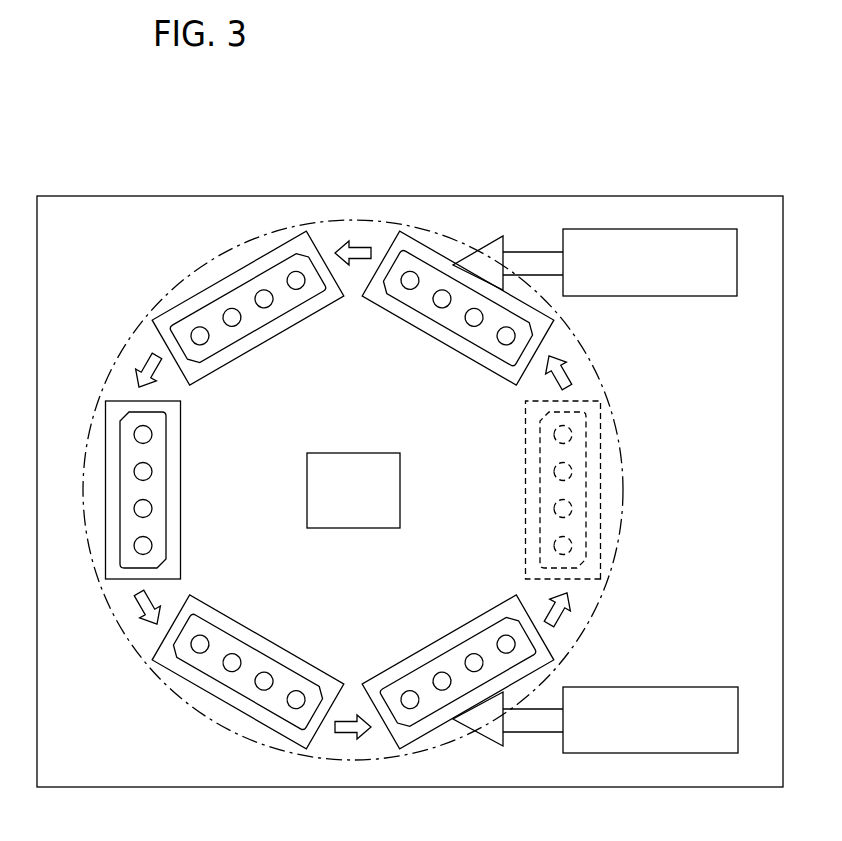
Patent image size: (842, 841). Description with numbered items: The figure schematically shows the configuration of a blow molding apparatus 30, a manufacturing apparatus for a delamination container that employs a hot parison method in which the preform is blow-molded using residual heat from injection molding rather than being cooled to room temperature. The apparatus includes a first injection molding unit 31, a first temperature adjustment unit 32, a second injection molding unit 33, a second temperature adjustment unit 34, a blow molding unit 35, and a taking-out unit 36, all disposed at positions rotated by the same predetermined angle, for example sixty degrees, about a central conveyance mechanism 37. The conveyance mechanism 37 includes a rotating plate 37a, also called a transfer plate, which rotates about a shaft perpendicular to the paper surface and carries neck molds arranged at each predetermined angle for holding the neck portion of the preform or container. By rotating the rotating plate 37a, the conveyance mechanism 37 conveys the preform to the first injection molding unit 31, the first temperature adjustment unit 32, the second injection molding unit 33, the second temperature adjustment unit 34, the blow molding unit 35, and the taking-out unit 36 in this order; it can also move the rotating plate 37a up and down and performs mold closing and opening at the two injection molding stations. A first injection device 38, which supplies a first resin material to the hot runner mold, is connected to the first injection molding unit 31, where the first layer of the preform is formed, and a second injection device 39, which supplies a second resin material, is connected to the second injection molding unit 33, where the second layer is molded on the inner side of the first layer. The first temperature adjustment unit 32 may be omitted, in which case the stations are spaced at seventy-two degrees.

The blow molding apparatus 30 is at (657, 196).
The first injection molding unit 31 is at (427, 640).
The first temperature adjustment unit 32 is at (526, 487).
The second injection molding unit 33 is at (432, 340).
The second temperature adjustment unit 34 is at (277, 340).
The blow molding unit 35 is at (183, 487).
The taking-out unit 36 is at (277, 640).
The conveyance mechanism 37 is at (350, 528).
The rotating plate 37a is at (623, 513).
The first injection device 38 is at (672, 686).
The second injection device 39 is at (672, 297).